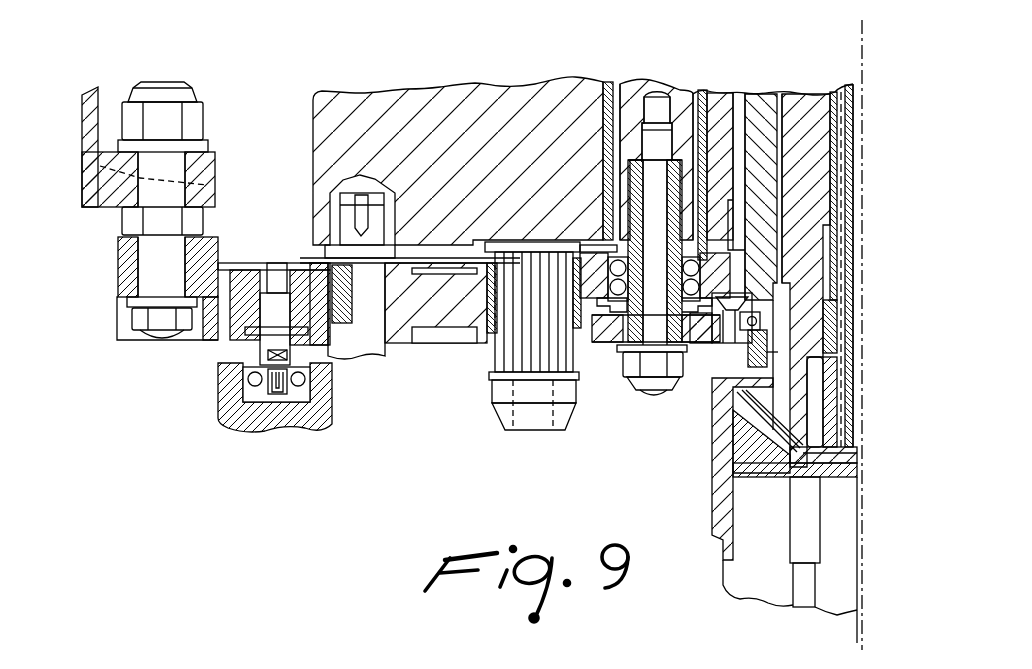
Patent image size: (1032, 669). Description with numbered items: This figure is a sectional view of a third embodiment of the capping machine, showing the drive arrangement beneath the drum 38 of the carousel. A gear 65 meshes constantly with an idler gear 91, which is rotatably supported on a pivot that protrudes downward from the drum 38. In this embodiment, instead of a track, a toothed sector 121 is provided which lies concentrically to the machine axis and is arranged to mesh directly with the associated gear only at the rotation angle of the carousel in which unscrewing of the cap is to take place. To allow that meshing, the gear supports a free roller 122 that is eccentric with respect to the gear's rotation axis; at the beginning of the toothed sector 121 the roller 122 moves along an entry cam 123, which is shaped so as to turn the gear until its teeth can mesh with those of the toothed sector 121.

The drum 38 is at (432, 80).
The toothed sector 121 is at (205, 248).
The free roller 122 is at (240, 383).
The entry cam 123 is at (320, 408).
The idler gear 91 is at (455, 372).
The gear 65 is at (582, 285).